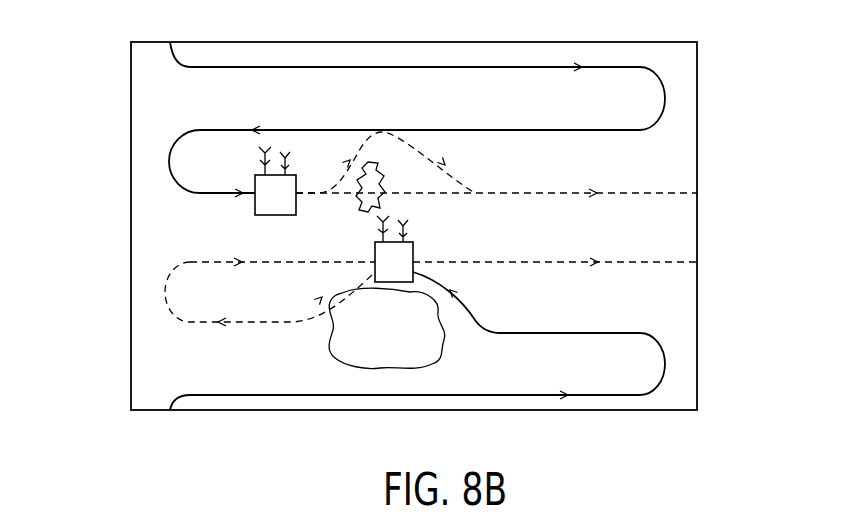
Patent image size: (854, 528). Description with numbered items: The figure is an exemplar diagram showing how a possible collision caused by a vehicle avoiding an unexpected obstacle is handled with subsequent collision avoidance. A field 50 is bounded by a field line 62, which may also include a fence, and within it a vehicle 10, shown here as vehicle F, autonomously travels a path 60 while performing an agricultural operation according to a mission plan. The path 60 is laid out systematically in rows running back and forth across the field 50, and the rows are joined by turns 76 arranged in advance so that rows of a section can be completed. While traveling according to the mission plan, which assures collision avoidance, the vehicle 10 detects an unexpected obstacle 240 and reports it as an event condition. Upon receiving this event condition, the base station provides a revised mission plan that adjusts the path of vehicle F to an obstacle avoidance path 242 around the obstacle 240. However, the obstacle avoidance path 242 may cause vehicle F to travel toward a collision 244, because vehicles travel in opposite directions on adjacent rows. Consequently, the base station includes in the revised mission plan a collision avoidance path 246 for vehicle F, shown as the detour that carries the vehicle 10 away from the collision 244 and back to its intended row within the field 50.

The field 50 is at (446, 211).
The field line 62 is at (697, 110).
The turns 76 is at (666, 100).
The path 60 is at (568, 131).
The vehicle 10 is at (262, 172).
The collision 244 is at (383, 175).
The collision avoidance path 246 is at (456, 176).
The obstacle avoidance path 242 is at (472, 312).
The obstacle 240 is at (440, 358).